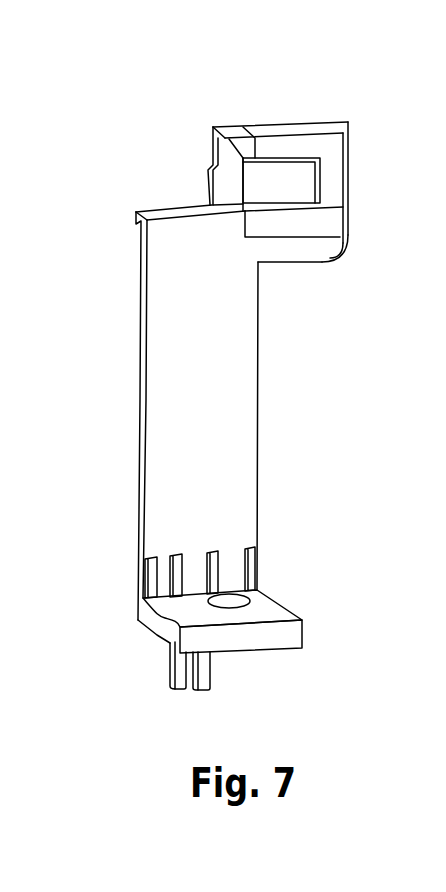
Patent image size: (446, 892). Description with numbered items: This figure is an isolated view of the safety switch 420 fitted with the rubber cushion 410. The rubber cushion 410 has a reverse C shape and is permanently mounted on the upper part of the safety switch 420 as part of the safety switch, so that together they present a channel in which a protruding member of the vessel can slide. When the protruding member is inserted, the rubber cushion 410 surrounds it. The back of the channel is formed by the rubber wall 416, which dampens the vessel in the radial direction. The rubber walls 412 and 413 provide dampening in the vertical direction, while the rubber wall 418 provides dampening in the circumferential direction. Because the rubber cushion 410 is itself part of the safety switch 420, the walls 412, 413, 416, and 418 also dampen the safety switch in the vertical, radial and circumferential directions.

The rubber cushion 410 is at (280, 130).
The rubber wall 412 is at (268, 148).
The rubber wall 413 is at (305, 247).
The rubber wall 416 is at (290, 185).
The rubber wall 418 is at (338, 183).
The safety switch 420 is at (163, 392).